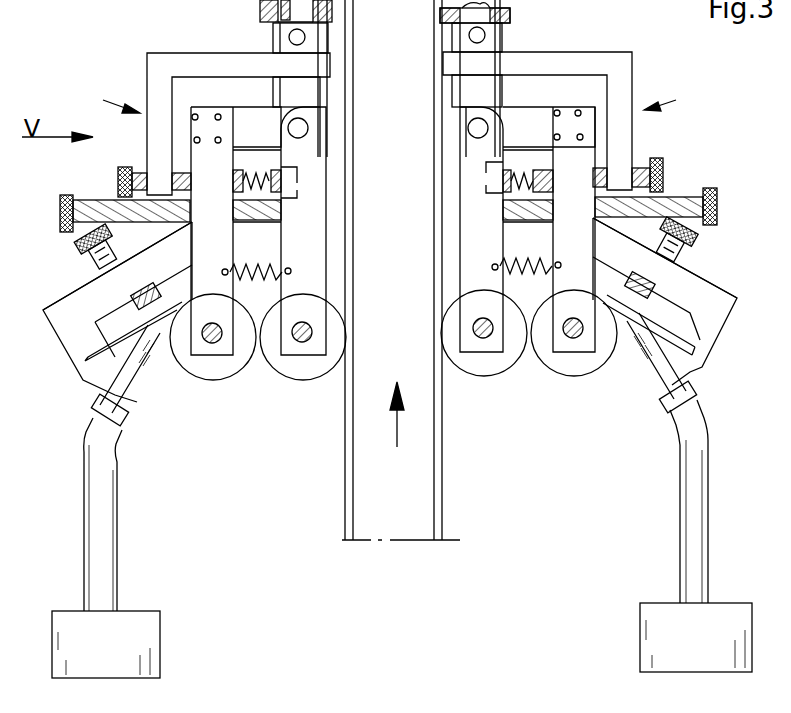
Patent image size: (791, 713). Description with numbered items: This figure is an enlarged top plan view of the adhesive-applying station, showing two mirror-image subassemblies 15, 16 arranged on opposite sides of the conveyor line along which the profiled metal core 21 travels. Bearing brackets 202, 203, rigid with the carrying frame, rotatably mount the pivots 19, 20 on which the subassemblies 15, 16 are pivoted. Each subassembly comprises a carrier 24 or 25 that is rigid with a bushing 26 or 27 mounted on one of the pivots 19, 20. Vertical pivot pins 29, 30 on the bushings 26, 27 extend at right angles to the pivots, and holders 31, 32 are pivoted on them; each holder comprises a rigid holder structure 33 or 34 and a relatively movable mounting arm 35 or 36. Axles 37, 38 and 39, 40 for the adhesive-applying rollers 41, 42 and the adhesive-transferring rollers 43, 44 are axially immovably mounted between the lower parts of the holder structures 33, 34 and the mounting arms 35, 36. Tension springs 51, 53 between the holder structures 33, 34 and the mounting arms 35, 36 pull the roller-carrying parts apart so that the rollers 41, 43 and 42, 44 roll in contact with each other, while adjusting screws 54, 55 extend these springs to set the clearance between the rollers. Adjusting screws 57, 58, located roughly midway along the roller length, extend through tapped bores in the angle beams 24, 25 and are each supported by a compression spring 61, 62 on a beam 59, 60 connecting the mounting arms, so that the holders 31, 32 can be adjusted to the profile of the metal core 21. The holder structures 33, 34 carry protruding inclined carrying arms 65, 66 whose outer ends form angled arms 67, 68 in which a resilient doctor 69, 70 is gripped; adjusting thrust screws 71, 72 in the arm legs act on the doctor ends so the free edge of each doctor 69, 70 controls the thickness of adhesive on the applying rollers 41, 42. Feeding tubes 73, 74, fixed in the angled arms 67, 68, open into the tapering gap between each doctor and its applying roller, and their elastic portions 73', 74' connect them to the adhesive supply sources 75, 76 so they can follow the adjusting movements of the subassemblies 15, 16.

The subassembly 15 is at (107, 99).
The subassembly 16 is at (672, 98).
The pivot 19 is at (260, 12).
The pivot 20 is at (437, 5).
The profiled metal core 21 is at (426, 491).
The carrier 24 is at (176, 58).
The carrier 25 is at (594, 58).
The bushing 26 is at (282, 92).
The bushing 27 is at (490, 92).
The pivot pin 29 is at (306, 124).
The pivot pin 30 is at (470, 130).
The holder 31 is at (240, 123).
The holder 32 is at (538, 125).
The holder structure 33 is at (228, 233).
The holder structure 34 is at (562, 226).
The mounting arm 35 is at (314, 251).
The mounting arm 36 is at (468, 271).
The axle 37 is at (211, 348).
The axle 38 is at (301, 348).
The axle 39 is at (481, 342).
The axle 40 is at (575, 345).
The adhesive-applying roller 41 is at (228, 366).
The adhesive-applying roller 42 is at (578, 367).
The adhesive-transferring roller 43 is at (321, 366).
The adhesive-transferring roller 44 is at (505, 366).
The tension spring 51 is at (242, 268).
The tension spring 53 is at (511, 266).
The adjusting screw 54 is at (66, 196).
The adjusting screw 55 is at (712, 190).
The adjusting screw 57 is at (118, 173).
The adjusting screw 58 is at (664, 164).
The beam 59 is at (294, 190).
The beam 60 is at (488, 185).
The compression spring 61 is at (268, 178).
The compression spring 62 is at (512, 178).
The carrying arm 65 is at (84, 290).
The carrying arm 66 is at (694, 283).
The angled arm 67 is at (68, 332).
The angled arm 68 is at (714, 334).
The doctor 69 is at (112, 318).
The doctor 70 is at (672, 332).
The adjusting thrust screw 71 is at (100, 247).
The adjusting thrust screw 72 is at (684, 240).
The feeding tube 73 is at (131, 375).
The feeding tube 74 is at (650, 367).
The feeding tube 73' is at (131, 514).
The feeding tube 74' is at (672, 501).
The adhesive supply source 75 is at (152, 635).
The adhesive supply source 76 is at (652, 628).
The bearing bracket 202 is at (256, 22).
The bearing bracket 203 is at (508, 14).